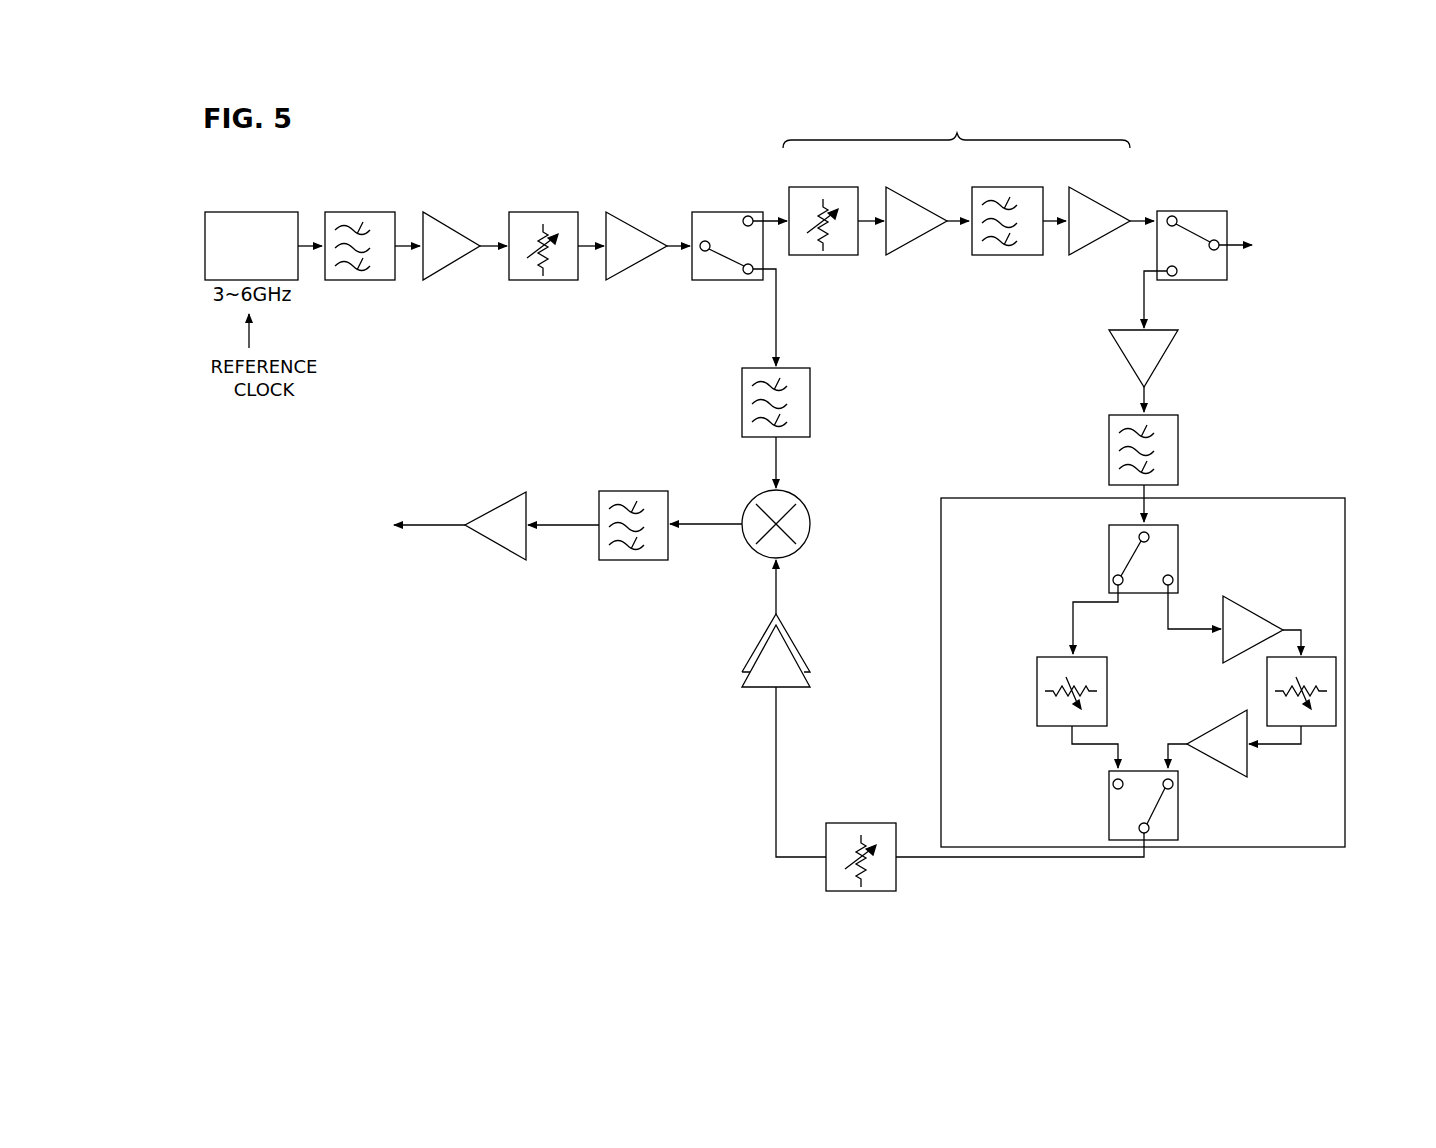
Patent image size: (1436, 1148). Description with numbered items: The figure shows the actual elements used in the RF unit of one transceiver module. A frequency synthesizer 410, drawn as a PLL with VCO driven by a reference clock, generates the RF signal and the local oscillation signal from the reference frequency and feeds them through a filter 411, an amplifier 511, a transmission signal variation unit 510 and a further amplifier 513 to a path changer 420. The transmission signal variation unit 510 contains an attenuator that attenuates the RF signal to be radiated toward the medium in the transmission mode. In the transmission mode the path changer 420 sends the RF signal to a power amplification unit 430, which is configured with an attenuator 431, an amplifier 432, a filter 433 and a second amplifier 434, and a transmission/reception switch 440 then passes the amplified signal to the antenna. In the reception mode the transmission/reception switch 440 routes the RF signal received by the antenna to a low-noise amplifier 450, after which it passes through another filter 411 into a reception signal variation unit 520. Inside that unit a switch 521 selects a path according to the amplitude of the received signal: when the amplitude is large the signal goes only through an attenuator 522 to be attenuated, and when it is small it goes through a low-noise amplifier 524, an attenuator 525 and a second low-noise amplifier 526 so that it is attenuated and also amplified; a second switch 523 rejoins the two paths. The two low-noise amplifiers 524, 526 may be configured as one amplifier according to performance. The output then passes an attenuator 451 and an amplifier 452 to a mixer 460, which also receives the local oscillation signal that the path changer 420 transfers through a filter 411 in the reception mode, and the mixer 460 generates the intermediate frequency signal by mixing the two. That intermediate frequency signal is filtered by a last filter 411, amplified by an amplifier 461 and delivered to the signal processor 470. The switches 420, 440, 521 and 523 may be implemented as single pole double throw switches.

The frequency synthesizer 410 is at (235, 212).
The filter 411 is at (358, 212).
The path changer 420 is at (719, 212).
The power amplification unit 430 is at (956, 129).
The attenuator 431 is at (806, 256).
The amplifier 432 is at (901, 256).
The filter 433 is at (988, 256).
The amplifier 434 is at (1086, 256).
The transmission/reception switch 440 is at (1182, 211).
The low-noise amplifier 450 is at (1158, 365).
The attenuator 451 is at (837, 823).
The amplifier 452 is at (793, 639).
The mixer 460 is at (807, 511).
The amplifier 461 is at (490, 511).
The signal processor 470 is at (329, 528).
The transmission signal variation unit 510 is at (525, 281).
The amplifier 511 is at (437, 281).
The amplifier 513 is at (621, 281).
The reception signal variation unit 520 is at (1006, 497).
The switch 521 is at (1109, 543).
The attenuator 522 is at (1037, 714).
The switch 523 is at (1179, 811).
The low-noise amplifier 524 is at (1233, 600).
The attenuator 525 is at (1318, 727).
The low-noise amplifier 526 is at (1233, 773).